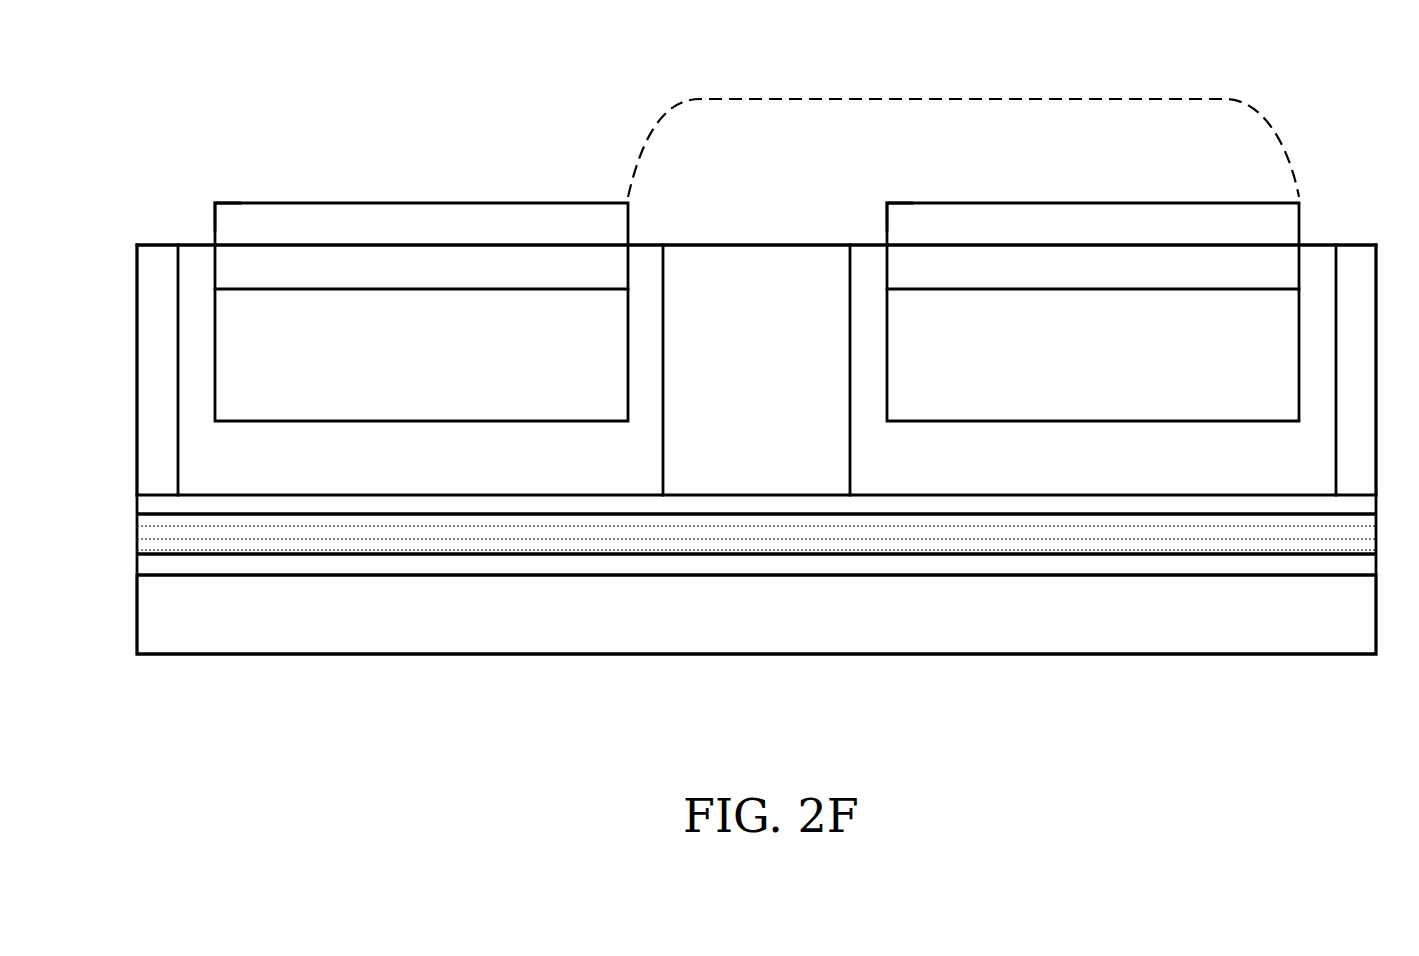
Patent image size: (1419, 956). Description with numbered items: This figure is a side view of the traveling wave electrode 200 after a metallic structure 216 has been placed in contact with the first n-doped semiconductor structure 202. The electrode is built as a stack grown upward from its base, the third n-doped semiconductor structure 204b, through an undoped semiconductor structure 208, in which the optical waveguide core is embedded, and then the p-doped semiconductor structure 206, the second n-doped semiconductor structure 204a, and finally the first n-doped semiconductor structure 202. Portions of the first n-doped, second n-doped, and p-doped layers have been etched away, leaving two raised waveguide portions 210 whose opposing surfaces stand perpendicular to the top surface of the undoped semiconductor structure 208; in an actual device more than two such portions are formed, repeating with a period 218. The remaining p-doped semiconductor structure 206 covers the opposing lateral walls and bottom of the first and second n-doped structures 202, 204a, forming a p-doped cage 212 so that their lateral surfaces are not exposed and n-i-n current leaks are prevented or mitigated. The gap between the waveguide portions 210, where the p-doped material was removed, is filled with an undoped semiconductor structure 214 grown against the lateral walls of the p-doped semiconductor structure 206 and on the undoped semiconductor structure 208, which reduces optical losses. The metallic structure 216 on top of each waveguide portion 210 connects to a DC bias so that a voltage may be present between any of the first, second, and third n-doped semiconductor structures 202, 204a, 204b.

The traveling wave electrode 200 is at (133, 123).
The first n-doped semiconductor structure 202 is at (629, 265).
The second n-doped semiconductor structure 204a is at (215, 335).
The third n-doped semiconductor structure 204b is at (137, 625).
The p-doped semiconductor structure 206 is at (177, 317).
The undoped semiconductor structure 208 is at (137, 505).
The waveguide portion 210 is at (206, 196).
The p-doped cage 212 is at (680, 272).
The undoped semiconductor structure 214 is at (137, 373).
The metallic structure 216 is at (260, 203).
The period 218 is at (960, 99).